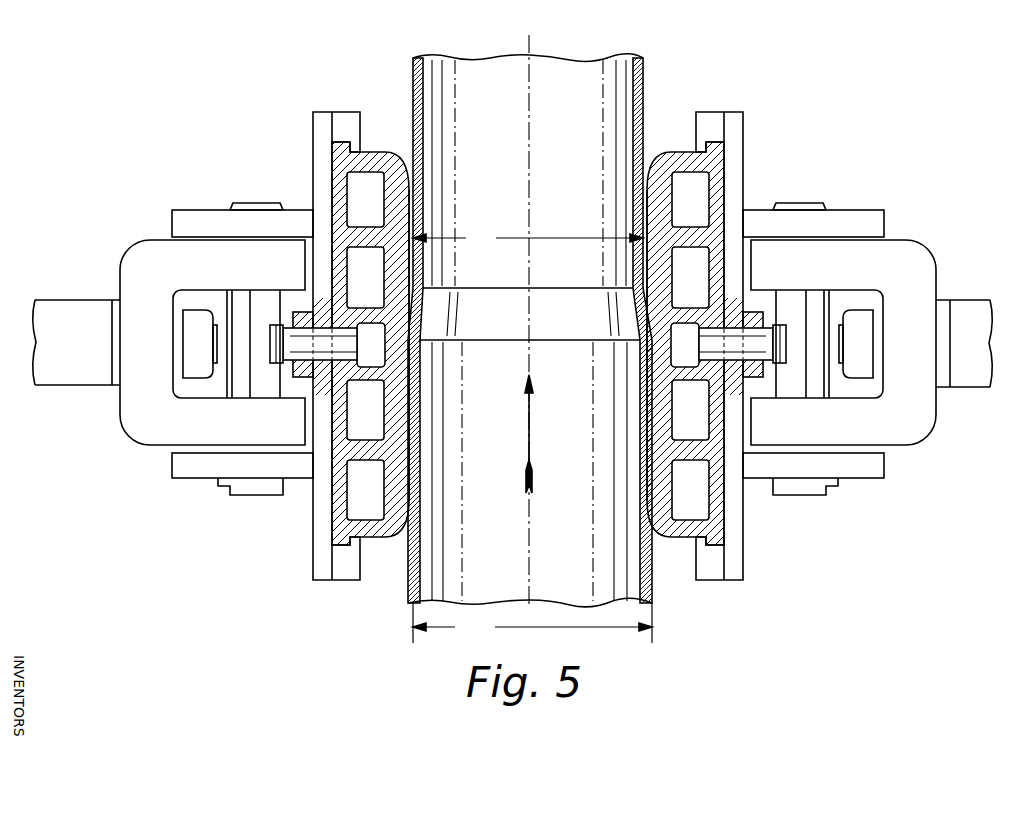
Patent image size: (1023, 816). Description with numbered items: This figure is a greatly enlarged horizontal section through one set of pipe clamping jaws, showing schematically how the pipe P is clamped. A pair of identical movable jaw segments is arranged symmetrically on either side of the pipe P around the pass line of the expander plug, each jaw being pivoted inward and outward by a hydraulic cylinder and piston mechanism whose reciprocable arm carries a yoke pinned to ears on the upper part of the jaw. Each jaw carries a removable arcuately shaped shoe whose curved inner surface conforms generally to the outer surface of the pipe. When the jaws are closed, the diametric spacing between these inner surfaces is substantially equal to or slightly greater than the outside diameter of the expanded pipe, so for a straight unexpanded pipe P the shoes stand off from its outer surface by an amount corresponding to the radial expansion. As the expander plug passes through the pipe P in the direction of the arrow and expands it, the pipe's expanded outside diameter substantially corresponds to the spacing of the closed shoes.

The pipe P is at (410, 605).